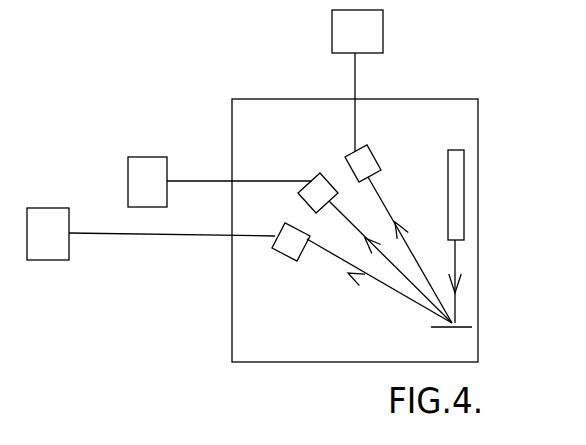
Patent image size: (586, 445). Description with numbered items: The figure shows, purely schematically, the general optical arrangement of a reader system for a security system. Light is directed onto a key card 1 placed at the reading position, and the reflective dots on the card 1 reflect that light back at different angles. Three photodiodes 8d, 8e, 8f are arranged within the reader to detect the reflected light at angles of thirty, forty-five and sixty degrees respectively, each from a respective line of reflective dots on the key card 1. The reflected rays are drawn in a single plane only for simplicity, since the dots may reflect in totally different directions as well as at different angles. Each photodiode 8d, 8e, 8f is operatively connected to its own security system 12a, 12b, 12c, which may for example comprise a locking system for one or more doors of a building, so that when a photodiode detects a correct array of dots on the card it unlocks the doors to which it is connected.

The key card 1 is at (457, 323).
The photodiode 8d is at (365, 158).
The photodiode 8e is at (316, 184).
The photodiode 8f is at (290, 247).
The security system 12a is at (370, 30).
The security system 12b is at (147, 163).
The security system 12c is at (43, 217).